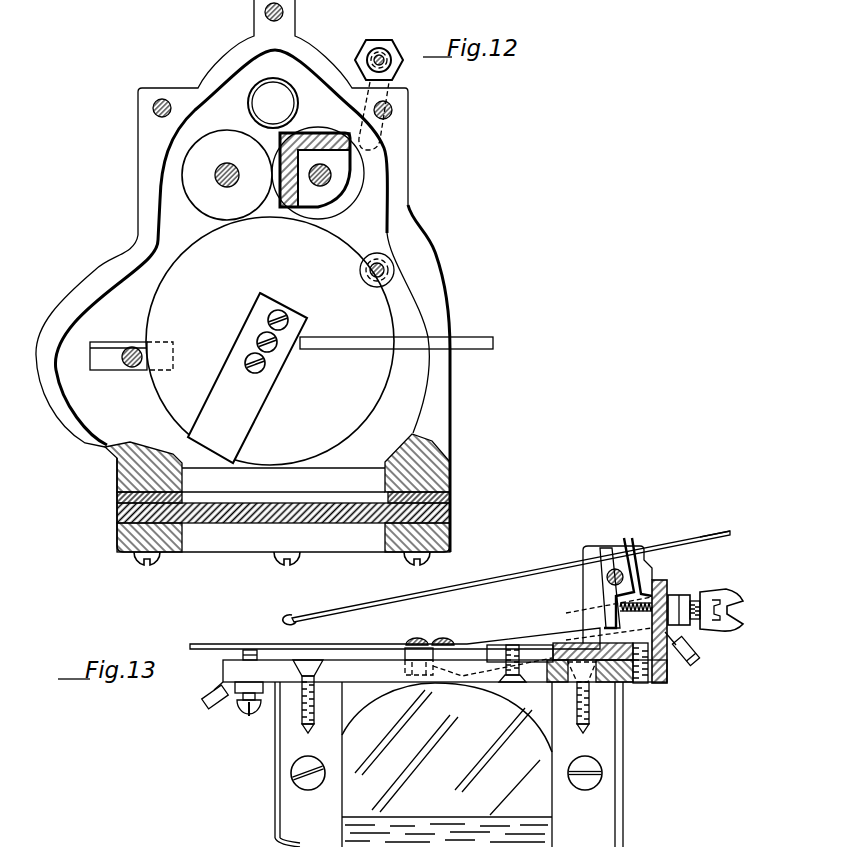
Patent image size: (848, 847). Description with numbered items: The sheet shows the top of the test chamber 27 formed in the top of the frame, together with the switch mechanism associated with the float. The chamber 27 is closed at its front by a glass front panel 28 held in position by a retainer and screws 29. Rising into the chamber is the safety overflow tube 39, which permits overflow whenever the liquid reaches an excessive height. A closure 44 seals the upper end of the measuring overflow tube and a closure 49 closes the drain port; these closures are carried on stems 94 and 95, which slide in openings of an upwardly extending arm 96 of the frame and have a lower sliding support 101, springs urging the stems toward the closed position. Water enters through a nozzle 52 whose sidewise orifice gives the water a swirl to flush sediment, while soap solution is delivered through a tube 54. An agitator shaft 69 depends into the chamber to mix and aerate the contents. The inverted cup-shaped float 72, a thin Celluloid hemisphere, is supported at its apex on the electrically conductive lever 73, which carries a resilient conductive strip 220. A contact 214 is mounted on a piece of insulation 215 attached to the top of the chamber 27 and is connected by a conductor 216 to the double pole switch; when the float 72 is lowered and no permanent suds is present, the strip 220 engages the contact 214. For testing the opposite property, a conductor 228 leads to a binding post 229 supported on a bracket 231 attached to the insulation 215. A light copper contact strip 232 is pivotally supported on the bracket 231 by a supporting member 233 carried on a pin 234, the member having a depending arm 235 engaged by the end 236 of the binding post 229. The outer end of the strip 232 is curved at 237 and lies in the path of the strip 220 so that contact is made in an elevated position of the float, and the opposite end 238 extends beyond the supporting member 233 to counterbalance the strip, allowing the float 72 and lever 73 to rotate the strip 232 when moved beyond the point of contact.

In FIG. 12, the test chamber 27 is at (417, 389).
In FIG. 12, the glass front panel 28 is at (450, 513).
In FIG. 13, the glass front panel 28 is at (548, 757).
In FIG. 12, the screws 29 is at (450, 541).
In FIG. 13, the screws 29 is at (449, 764).
In FIG. 12, the safety overflow tube 39 is at (289, 83).
In FIG. 12, the closure 44 is at (227, 175).
In FIG. 12, the closure 49 is at (357, 172).
In FIG. 12, the nozzle 52 is at (392, 271).
In FIG. 12, the tube 54 is at (382, 50).
In FIG. 12, the shaft 69 is at (128, 370).
In FIG. 12, the inverted cup-shaped float 72 is at (270, 341).
In FIG. 13, the inverted cup-shaped float 72 is at (511, 703).
In FIG. 12, the lever 73 is at (470, 338).
In FIG. 13, the lever 73 is at (718, 604).
In FIG. 12, the stem 94 is at (221, 188).
In FIG. 12, the stem 95 is at (316, 188).
In FIG. 12, the upwardly extending arm 96 is at (301, 134).
In FIG. 12, the lower sliding support 101 is at (331, 181).
In FIG. 13, the contact 214 is at (250, 650).
In FIG. 13, the piece of insulation 215 is at (628, 686).
In FIG. 13, the conductor 216 is at (207, 692).
In FIG. 12, the strip of conductive material 220 is at (247, 378).
In FIG. 13, the strip of conductive material 220 is at (203, 645).
In FIG. 13, the conductor 228 is at (698, 650).
In FIG. 13, the binding post 229 is at (692, 599).
In FIG. 13, the bracket 231 is at (669, 664).
In FIG. 13, the contact strip 232 is at (506, 576).
In FIG. 13, the supporting member 233 is at (628, 560).
In FIG. 13, the pin 234 is at (614, 568).
In FIG. 13, the depending arm 235 is at (600, 618).
In FIG. 13, the end of binding post 236 is at (638, 594).
In FIG. 13, the curved outer end 237 is at (294, 616).
In FIG. 13, the extended end 238 is at (717, 533).